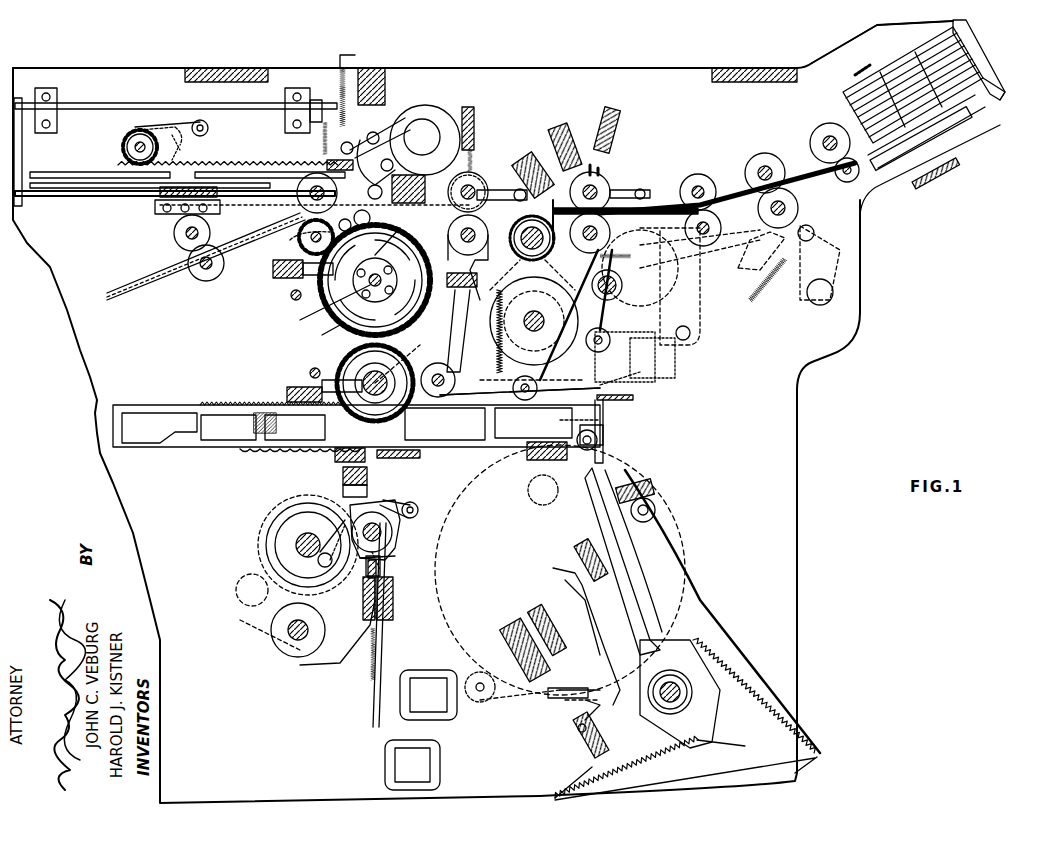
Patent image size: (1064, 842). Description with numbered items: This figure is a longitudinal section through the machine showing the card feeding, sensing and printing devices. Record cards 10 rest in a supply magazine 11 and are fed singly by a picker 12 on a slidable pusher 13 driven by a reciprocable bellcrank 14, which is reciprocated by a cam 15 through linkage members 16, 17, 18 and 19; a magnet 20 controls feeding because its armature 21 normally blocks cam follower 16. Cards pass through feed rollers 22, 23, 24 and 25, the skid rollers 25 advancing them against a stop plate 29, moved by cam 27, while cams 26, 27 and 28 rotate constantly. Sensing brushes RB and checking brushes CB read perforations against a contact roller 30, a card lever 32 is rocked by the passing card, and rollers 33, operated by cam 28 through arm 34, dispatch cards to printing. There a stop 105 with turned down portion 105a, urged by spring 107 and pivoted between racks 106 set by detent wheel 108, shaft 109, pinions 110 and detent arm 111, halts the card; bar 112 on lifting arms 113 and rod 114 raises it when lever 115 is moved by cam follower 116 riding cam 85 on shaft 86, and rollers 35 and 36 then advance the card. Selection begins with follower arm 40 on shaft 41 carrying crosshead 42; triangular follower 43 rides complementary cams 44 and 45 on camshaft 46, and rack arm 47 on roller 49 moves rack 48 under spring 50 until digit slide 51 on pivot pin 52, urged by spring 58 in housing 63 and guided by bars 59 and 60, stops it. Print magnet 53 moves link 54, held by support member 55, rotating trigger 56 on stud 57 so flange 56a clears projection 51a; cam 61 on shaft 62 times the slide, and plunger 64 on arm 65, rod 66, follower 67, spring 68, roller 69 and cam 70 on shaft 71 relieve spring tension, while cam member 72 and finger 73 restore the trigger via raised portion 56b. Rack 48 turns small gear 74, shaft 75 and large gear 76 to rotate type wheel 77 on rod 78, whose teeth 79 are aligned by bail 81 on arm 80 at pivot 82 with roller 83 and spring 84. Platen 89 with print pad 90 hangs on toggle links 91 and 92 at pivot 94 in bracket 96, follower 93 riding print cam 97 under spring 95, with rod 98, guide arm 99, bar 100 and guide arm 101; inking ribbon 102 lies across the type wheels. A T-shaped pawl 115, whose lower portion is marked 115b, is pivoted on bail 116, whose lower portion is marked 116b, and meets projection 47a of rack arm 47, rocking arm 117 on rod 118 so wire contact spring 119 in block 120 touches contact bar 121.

The record cards 10 is at (965, 45).
The supply magazine 11 is at (847, 48).
The picker 12 is at (1007, 93).
The slidable pusher 13 is at (978, 128).
The reciprocable bellcrank 14 is at (945, 162).
The linkage member 19 is at (905, 188).
The first pair of feed rollers 22 is at (835, 165).
The feed rollers 23 is at (760, 196).
The feed rollers 24 is at (690, 205).
The skid feed rollers 25 is at (600, 185).
The linkage member 17 is at (745, 255).
The linkage member 18 is at (825, 255).
The cam follower 16 is at (700, 285).
The cam 15 is at (630, 325).
The armature 21 is at (668, 352).
The magnet 20 is at (640, 395).
The stop plate 29 is at (605, 240).
The sensing brushes RB is at (623, 216).
The checking brushes CB is at (520, 195).
The contact roller 30 is at (518, 225).
The dispatch rollers 33 is at (455, 200).
The arm 34 is at (480, 262).
The card lever 32 is at (592, 285).
The cam 28 is at (545, 330).
The aligner bail cam 26 is at (490, 345).
The cam 27 is at (538, 388).
The roller 83 is at (600, 393).
The support bracket 96 is at (388, 95).
The print cam 97 is at (468, 107).
The constantly rotating shaft 86 is at (432, 105).
The cam 85 is at (428, 120).
The cam follower 93 is at (398, 108).
The pivot 94 is at (400, 125).
The toggle link 91 is at (369, 137).
The toggle link 92 is at (395, 166).
The support bar 100 is at (424, 187).
The rod 98 is at (339, 193).
The coil spring 95 is at (335, 72).
The cam follower 116 is at (318, 138).
The guide arm 101 is at (327, 162).
The operating lever 115 is at (310, 88).
The rod 114 is at (115, 103).
The lifting arms 113 is at (22, 158).
The bar 112 is at (85, 198).
The slidable racks 106 is at (252, 162).
The shaft 109 is at (120, 143).
The detent wheel 108 is at (125, 128).
The pinions 110 is at (123, 156).
The detent arm 111 is at (190, 140).
The spring 107 is at (155, 206).
The stop 105 is at (268, 210).
The turned down portion 105a is at (328, 234).
The rollers 36 is at (185, 243).
The rollers 35 is at (300, 225).
The type aligner bail arm 80 is at (418, 330).
The vertically movable arm 99 is at (388, 270).
The printing platen 89 is at (367, 227).
The print pad 90 is at (347, 236).
The inking ribbon 102 is at (401, 247).
The gear teeth 79 is at (305, 300).
The rod 78 is at (320, 320).
The type wheel 77 is at (322, 336).
The small gear 74 is at (425, 350).
The shaft 75 is at (375, 370).
The large gear 76 is at (340, 368).
The aligner bail 81 is at (462, 289).
The spring 84 is at (458, 338).
The pivot 82 is at (455, 380).
The stationary bar 60 is at (335, 458).
The stationary bar 59 is at (410, 458).
The complementary cam 44 is at (605, 418).
The rack 48 is at (605, 435).
The roller 49 is at (600, 445).
The type rack follower arm 40 is at (685, 575).
The triangular cam follower 43 is at (700, 605).
The rack arm 47 is at (640, 565).
The crosshead 42 is at (655, 487).
The complementary cam 45 is at (680, 520).
The main machine camshaft 46 is at (545, 501).
The shaft 41 is at (690, 690).
The spring 50 is at (773, 723).
The block 116b is at (600, 740).
The arm 117 is at (560, 585).
The rod 118 is at (578, 560).
The contact bar 121 is at (518, 700).
The wire contact spring 119 is at (532, 706).
The insulating block 120 is at (566, 708).
The projection 47a is at (597, 689).
The link 115b is at (607, 708).
The stud 57 is at (343, 490).
The trigger 56 is at (408, 502).
The digit slide 51 is at (392, 530).
The constantly rotating shaft 62 is at (398, 538).
The cam member 61 is at (398, 550).
The stationary pivot pin 52 is at (380, 568).
The spring 58 is at (363, 600).
The support housing 63 is at (393, 585).
The plunger 64 is at (393, 600).
The projection 51a is at (359, 583).
The link 54 is at (390, 648).
The spring 68 is at (368, 672).
The arm 65 is at (325, 668).
The rod 66 is at (285, 640).
The cam follower 67 is at (264, 633).
The cam follower roller 69 is at (236, 590).
The cam 70 is at (262, 520).
The cam member 72 is at (268, 538).
The shaft 71 is at (300, 550).
The finger 73 is at (338, 535).
The turn-out flange 56a is at (322, 529).
The raised portion 56b is at (312, 565).
The print magnet 53 is at (445, 718).
The support member 55 is at (412, 755).